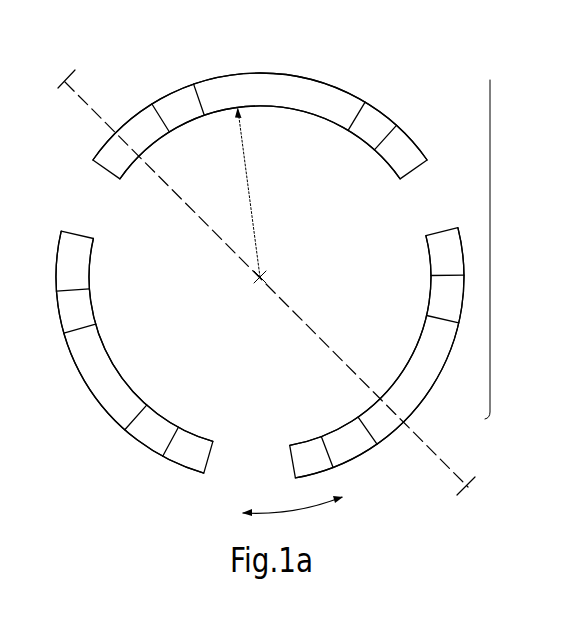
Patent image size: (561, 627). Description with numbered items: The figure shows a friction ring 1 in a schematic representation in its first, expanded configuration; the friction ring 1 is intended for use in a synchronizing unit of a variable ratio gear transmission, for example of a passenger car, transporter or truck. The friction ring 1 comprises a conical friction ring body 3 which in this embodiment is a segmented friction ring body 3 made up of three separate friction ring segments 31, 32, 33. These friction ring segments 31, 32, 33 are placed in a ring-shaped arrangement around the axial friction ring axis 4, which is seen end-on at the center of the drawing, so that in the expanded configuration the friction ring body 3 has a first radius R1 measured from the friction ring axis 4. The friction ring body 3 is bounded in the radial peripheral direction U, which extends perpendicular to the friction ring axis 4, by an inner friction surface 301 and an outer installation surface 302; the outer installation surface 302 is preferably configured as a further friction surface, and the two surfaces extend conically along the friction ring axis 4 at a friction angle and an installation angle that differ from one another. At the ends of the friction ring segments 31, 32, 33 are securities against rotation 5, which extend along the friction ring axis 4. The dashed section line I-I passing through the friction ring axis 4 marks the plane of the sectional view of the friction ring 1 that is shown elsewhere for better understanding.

The friction ring 1 is at (266, 262).
The friction ring body 3 is at (490, 230).
The friction ring axis 4 is at (256, 279).
The securities against rotation 5 is at (176, 100).
The friction ring segment 31 is at (284, 73).
The friction ring segment 32 is at (378, 418).
The friction ring segment 33 is at (83, 343).
The inner friction surface 301 is at (307, 112).
The outer installation surface 302 is at (231, 74).
The first radius R1 is at (260, 193).
The radial peripheral direction U is at (290, 511).
The section line I- I is at (272, 285).